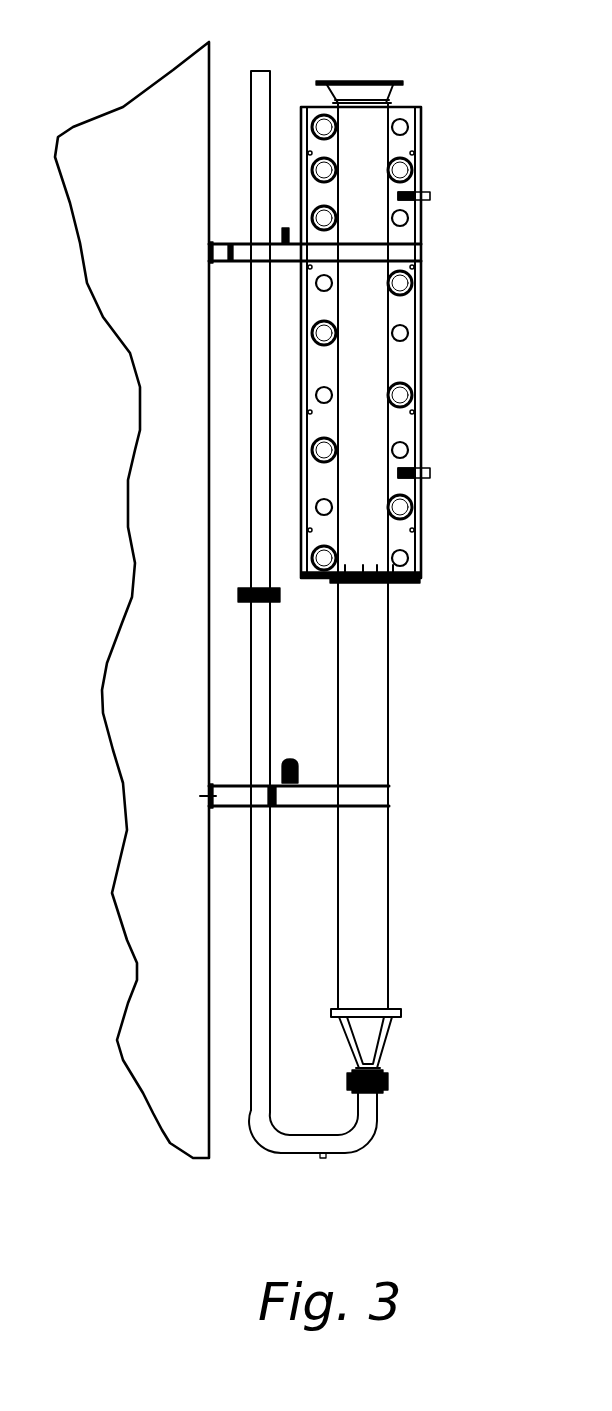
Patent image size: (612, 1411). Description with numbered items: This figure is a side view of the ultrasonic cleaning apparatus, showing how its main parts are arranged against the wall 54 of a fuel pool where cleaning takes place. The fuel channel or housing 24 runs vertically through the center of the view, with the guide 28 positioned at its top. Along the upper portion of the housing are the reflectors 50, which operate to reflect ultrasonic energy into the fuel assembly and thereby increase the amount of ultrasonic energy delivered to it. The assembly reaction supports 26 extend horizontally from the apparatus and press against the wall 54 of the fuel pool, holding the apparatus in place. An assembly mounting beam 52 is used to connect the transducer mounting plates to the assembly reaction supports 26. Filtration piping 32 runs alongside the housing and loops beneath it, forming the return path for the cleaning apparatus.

The fuel channel or housing 24 is at (389, 847).
The assembly reaction support 26 is at (227, 243).
The guide 28 is at (372, 81).
The filtration piping 32 is at (362, 1140).
The reflectors 50 is at (421, 360).
The assembly mounting beam 52 is at (403, 243).
The wall 54 is at (208, 70).